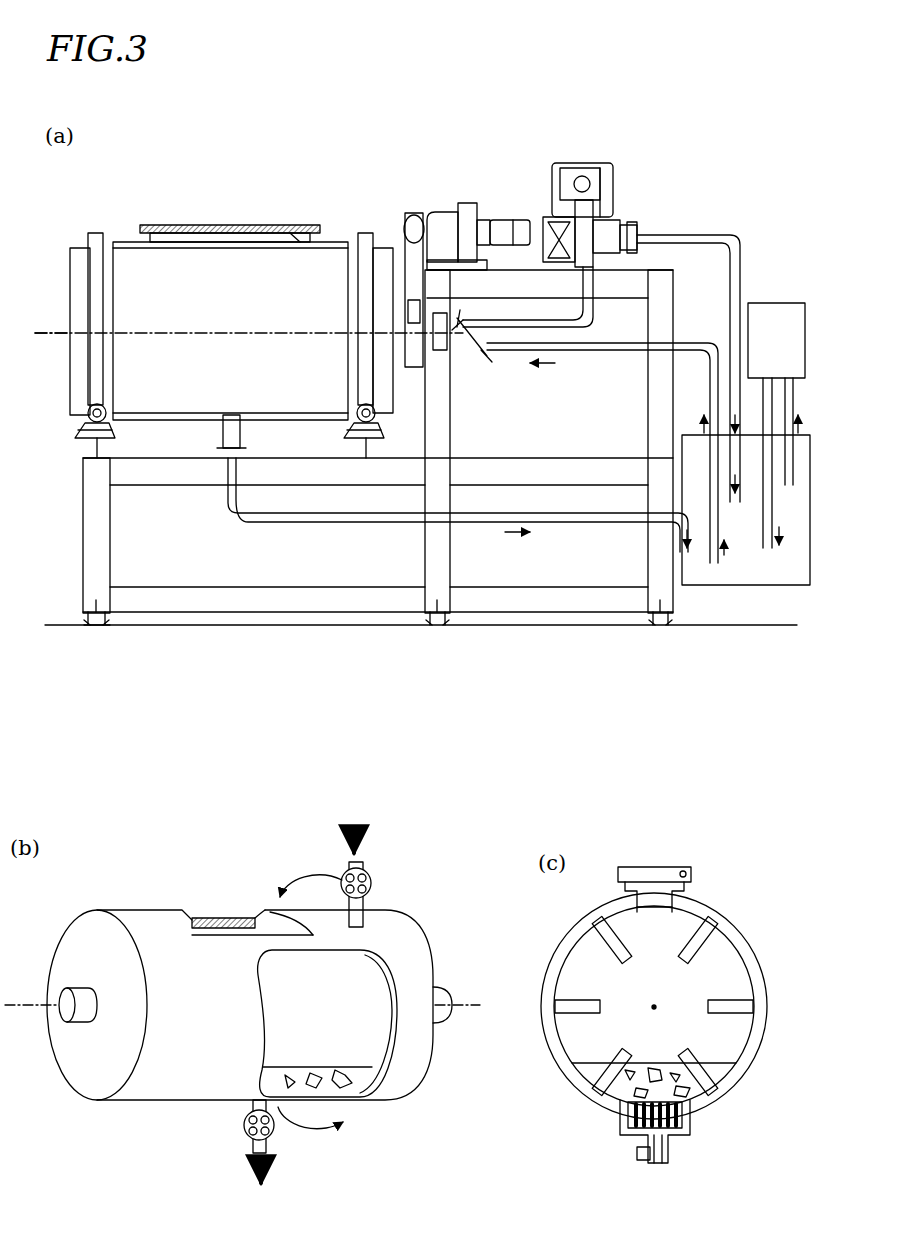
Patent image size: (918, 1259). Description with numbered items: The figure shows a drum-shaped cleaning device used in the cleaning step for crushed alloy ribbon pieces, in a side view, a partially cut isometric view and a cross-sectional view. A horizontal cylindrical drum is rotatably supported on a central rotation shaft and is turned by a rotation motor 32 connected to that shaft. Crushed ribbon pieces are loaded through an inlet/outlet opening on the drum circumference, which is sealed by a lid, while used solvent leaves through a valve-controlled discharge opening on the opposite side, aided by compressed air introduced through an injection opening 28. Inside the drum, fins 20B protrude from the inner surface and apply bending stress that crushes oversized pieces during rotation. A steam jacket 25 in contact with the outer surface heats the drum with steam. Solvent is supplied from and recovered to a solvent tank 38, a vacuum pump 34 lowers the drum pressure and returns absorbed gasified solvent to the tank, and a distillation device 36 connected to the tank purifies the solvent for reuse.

The fins 20B is at (710, 940).
The steam jacket 25 is at (112, 353).
The injection opening 28 is at (368, 876).
The rotation motor 32 is at (464, 205).
The vacuum pump 34 is at (590, 168).
The distillation device 36 is at (788, 314).
The solvent tank 38 is at (724, 580).